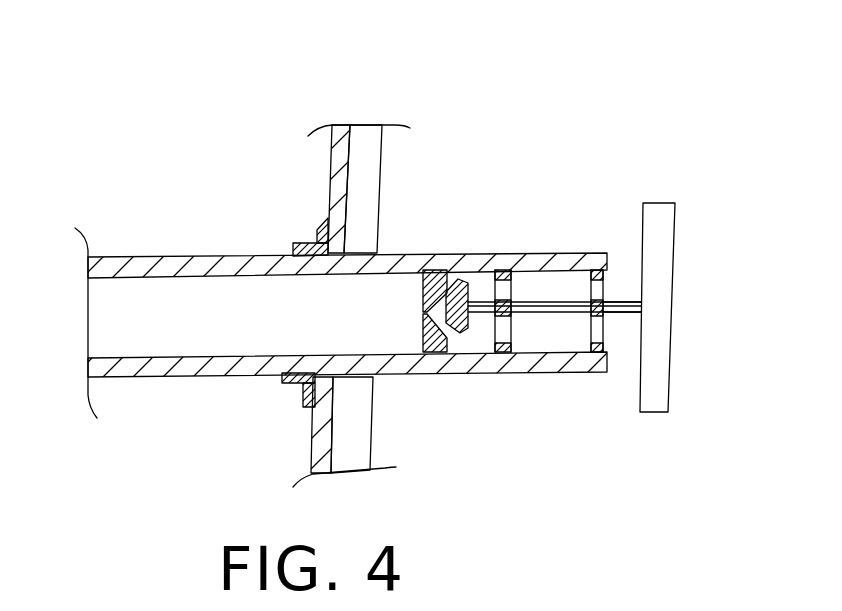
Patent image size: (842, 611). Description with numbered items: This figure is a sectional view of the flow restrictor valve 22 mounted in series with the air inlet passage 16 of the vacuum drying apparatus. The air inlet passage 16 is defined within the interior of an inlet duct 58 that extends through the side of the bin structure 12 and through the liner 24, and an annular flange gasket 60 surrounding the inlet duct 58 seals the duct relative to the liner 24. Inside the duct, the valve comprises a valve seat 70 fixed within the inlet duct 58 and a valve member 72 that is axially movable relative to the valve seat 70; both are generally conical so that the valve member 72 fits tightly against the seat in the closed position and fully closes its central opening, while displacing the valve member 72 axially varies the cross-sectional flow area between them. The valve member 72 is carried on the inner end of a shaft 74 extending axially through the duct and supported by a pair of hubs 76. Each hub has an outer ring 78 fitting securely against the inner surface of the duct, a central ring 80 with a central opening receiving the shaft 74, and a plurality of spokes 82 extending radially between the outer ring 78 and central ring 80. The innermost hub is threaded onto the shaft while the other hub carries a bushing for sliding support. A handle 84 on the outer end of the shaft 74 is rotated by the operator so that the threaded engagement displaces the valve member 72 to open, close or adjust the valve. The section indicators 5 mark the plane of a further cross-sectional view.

The section line 5- 5 is at (515, 180).
The bin structure 12 is at (367, 171).
The air inlet passage 16 is at (341, 330).
The flow restrictor valve 22 is at (486, 108).
The liner 24 is at (338, 306).
The inlet duct 58 is at (148, 268).
The annular flange gasket 60 is at (303, 395).
The valve seat 70 is at (436, 347).
The valve member 72 is at (458, 277).
The shaft 74 is at (565, 305).
The hubs 76 is at (503, 354).
The outer ring 78 is at (603, 349).
The central ring 80 is at (603, 293).
The spokes 82 is at (598, 333).
The handle 84 is at (660, 398).